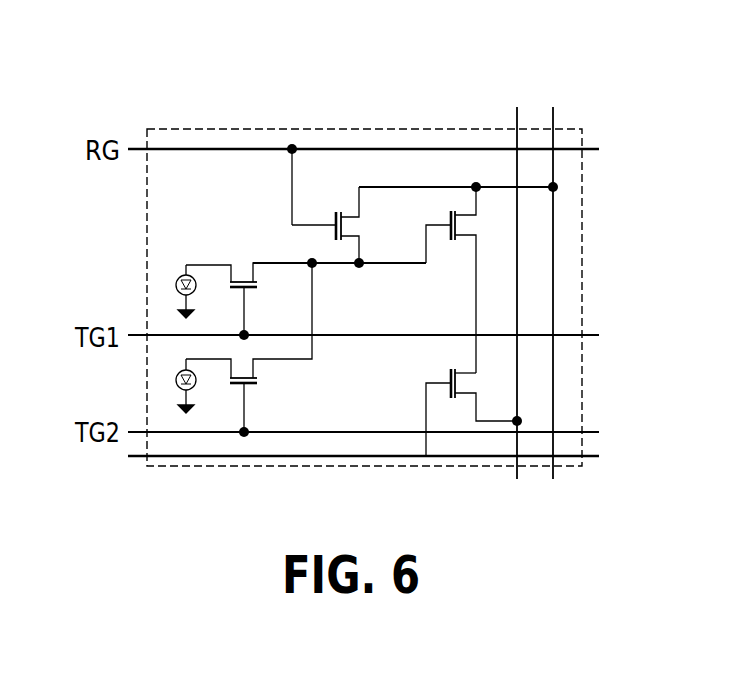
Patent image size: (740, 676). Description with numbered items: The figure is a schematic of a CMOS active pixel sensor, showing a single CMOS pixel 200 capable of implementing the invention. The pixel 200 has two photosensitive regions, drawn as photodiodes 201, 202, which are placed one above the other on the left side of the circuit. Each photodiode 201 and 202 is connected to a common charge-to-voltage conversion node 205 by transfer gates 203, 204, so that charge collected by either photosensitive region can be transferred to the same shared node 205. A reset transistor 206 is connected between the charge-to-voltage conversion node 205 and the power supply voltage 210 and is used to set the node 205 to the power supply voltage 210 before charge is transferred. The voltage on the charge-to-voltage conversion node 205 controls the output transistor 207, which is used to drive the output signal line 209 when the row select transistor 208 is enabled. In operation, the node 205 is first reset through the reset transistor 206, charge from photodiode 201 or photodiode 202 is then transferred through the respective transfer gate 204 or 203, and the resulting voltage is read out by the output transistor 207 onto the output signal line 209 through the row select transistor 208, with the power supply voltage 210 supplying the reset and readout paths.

The CMOS pixel 200 is at (253, 128).
The photodiode 201 is at (178, 279).
The photodiode 202 is at (176, 378).
The transfer gate 203 is at (258, 380).
The transfer gate 204 is at (245, 267).
The charge-to-voltage conversion node 205 is at (316, 266).
The reset transistor 206 is at (333, 215).
The output transistor 207 is at (455, 243).
The row select transistor 208 is at (450, 382).
The output signal line 209 is at (517, 105).
The power supply voltage 210 is at (555, 105).